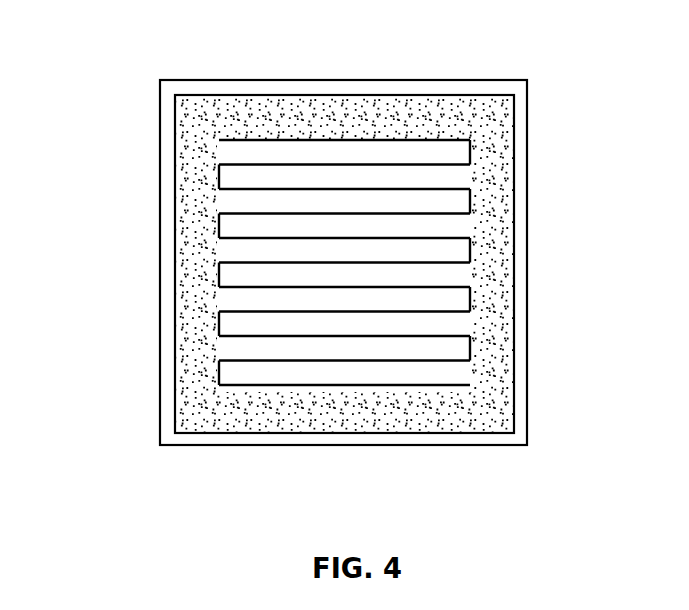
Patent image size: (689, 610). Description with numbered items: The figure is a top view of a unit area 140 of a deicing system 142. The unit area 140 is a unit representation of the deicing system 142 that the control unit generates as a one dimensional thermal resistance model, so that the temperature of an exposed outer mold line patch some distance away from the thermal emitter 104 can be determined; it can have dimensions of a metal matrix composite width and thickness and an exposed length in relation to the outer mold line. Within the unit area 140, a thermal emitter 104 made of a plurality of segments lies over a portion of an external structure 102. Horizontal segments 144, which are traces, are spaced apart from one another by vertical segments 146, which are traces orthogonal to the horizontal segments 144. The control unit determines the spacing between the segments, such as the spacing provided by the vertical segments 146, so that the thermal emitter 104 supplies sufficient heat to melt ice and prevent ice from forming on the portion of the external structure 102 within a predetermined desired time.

The unit area 140 is at (126, 209).
The deicing system 142 is at (543, 78).
The external structure 102 is at (454, 177).
The thermal emitter 104 is at (377, 140).
The horizontal segments 144 is at (283, 138).
The vertical segments 146 is at (472, 150).